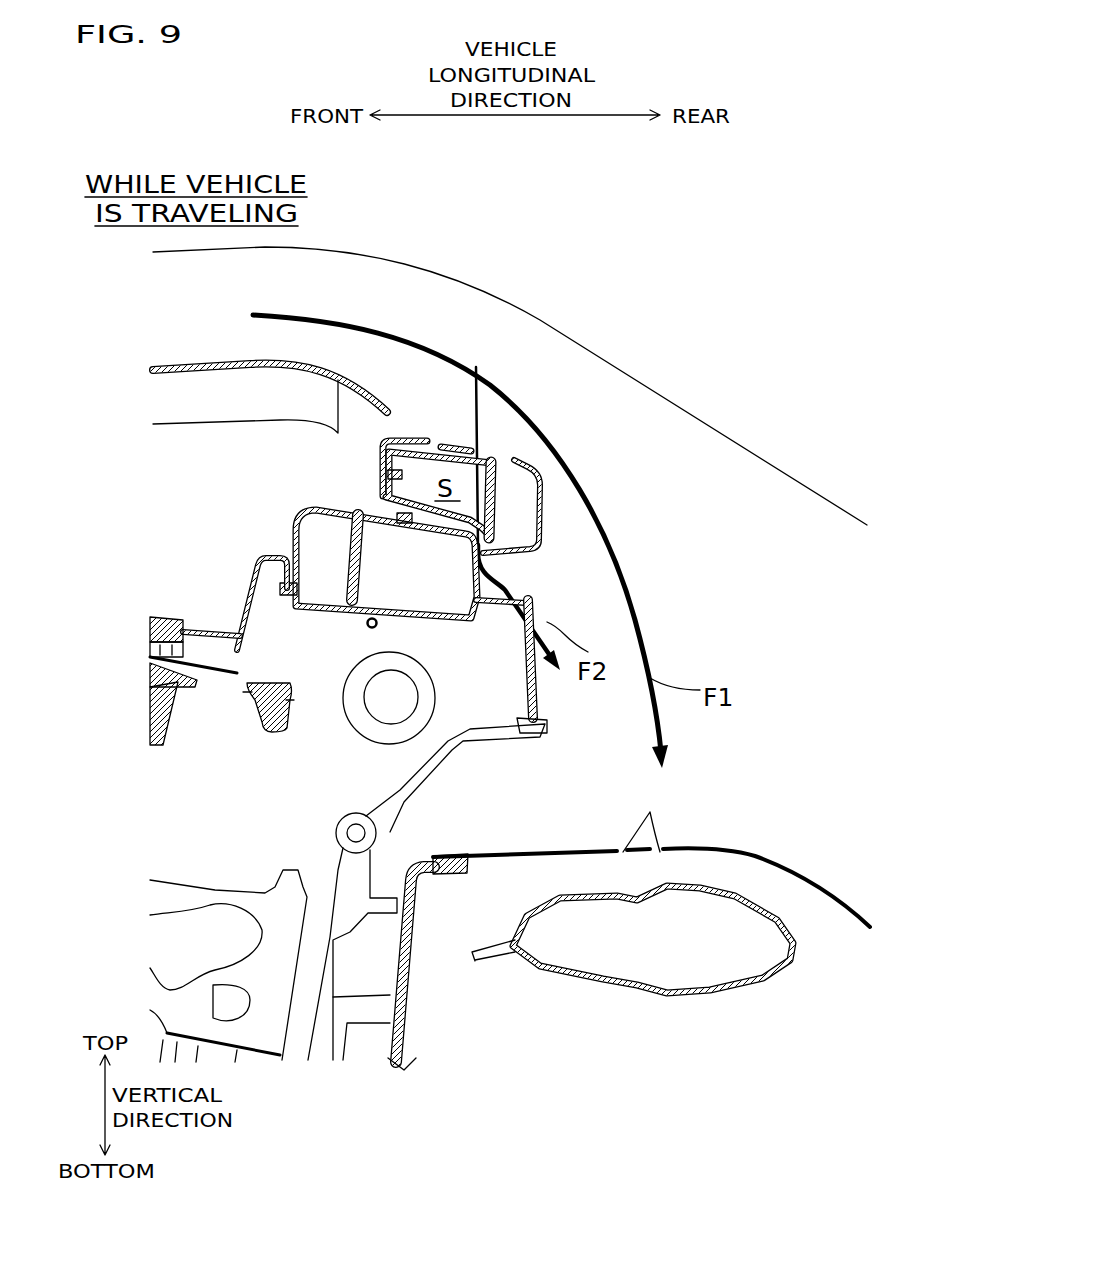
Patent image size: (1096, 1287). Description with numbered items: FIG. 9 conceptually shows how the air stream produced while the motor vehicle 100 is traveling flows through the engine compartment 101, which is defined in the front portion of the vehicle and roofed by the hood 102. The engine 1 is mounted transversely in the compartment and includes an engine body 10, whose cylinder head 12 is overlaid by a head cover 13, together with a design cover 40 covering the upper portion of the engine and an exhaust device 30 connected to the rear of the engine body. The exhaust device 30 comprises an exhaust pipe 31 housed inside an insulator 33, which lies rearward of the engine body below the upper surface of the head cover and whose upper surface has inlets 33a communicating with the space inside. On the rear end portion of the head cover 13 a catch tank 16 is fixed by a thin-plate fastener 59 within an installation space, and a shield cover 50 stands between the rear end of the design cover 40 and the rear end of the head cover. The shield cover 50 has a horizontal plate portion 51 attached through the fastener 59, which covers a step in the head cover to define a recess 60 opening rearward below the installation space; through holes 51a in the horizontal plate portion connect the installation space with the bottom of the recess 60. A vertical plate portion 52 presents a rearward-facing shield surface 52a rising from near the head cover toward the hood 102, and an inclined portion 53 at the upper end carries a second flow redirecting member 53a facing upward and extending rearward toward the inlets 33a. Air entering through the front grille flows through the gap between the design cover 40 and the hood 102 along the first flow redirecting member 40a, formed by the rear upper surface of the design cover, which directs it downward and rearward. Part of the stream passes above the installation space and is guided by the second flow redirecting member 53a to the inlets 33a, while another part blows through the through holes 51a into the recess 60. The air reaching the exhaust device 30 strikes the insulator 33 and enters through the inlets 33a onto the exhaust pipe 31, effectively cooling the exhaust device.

The engine 1 is at (781, 640).
The engine body 10 is at (427, 889).
The cylinder head 12 is at (424, 772).
The head cover 13 is at (258, 580).
The catch tank 16 is at (380, 492).
The exhaust device 30 is at (629, 925).
The exhaust pipe 31 is at (768, 973).
The insulator 33 is at (814, 879).
The inlets 33a is at (653, 816).
The design cover 40 is at (296, 354).
The first flow redirecting member 40a is at (362, 397).
The shield cover 50 is at (607, 517).
The horizontal plate portion 51 is at (406, 614).
The through holes 51a is at (484, 600).
The vertical plate portion 52 is at (608, 507).
The shield surface 52a is at (543, 518).
The inclined portion 53 is at (607, 506).
The second flow redirecting member 53a is at (548, 464).
The fastener 59 is at (378, 454).
The recess 60 is at (502, 566).
The motor vehicle 100 is at (510, 373).
The engine compartment 101 is at (822, 716).
The hood 102 is at (447, 282).